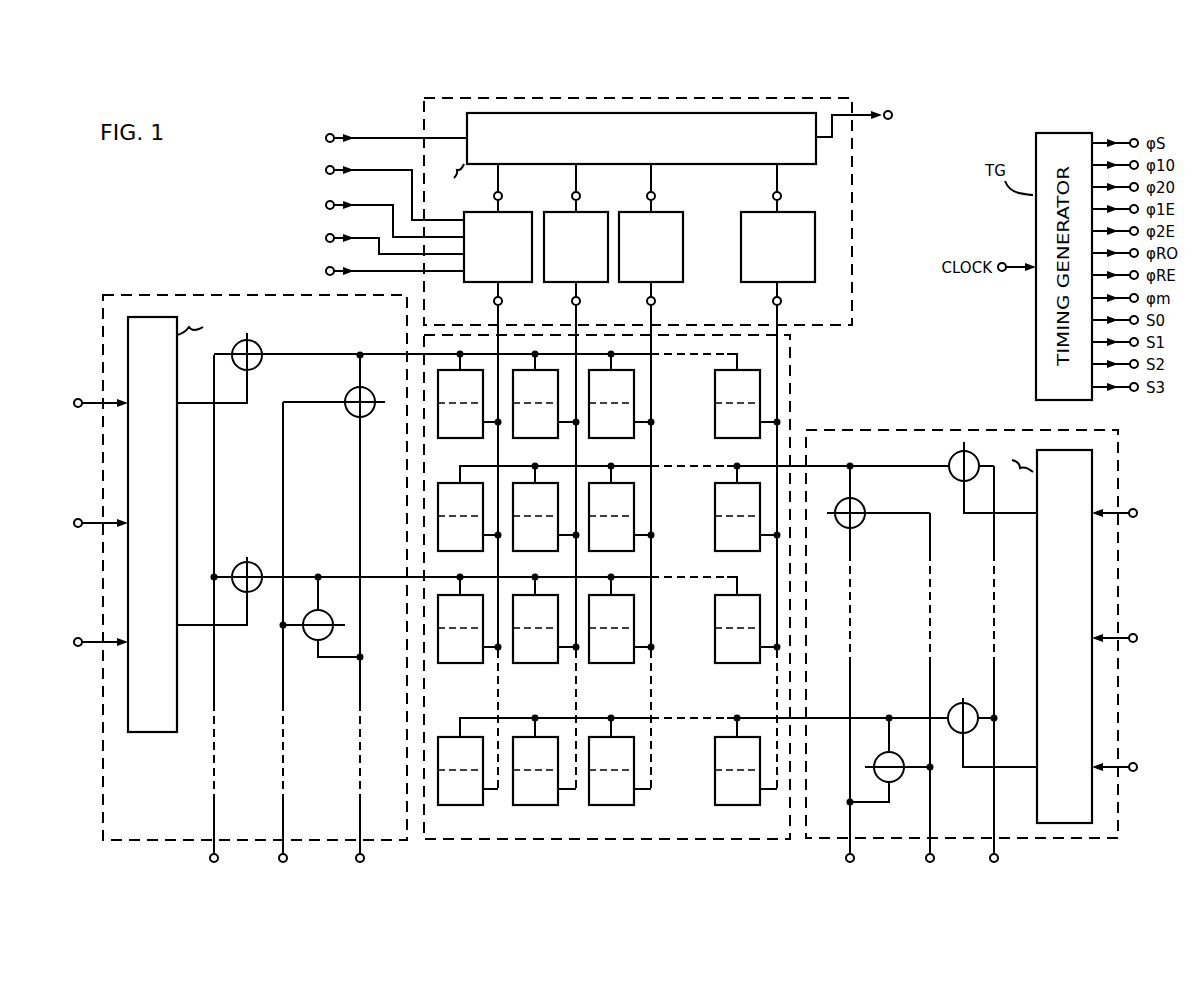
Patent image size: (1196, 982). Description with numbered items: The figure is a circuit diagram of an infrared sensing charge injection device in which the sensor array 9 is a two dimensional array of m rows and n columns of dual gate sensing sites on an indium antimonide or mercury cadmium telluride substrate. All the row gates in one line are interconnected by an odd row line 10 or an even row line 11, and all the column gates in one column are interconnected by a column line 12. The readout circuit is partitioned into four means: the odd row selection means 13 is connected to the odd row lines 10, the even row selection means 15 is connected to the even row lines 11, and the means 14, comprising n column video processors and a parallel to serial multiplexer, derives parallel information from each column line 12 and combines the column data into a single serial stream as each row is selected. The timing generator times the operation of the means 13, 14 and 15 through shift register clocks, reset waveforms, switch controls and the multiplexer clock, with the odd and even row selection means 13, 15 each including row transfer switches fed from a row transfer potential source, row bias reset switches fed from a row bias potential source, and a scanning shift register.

The sensor array 9 is at (546, 841).
The odd conductive row line 10 is at (675, 358).
The even conductive row line 11 is at (675, 470).
The conductive column line 12 is at (499, 692).
The odd row selection means 13 is at (103, 778).
The column video processing and multiplexing means 14 is at (852, 197).
The even row selection means 15 is at (874, 429).